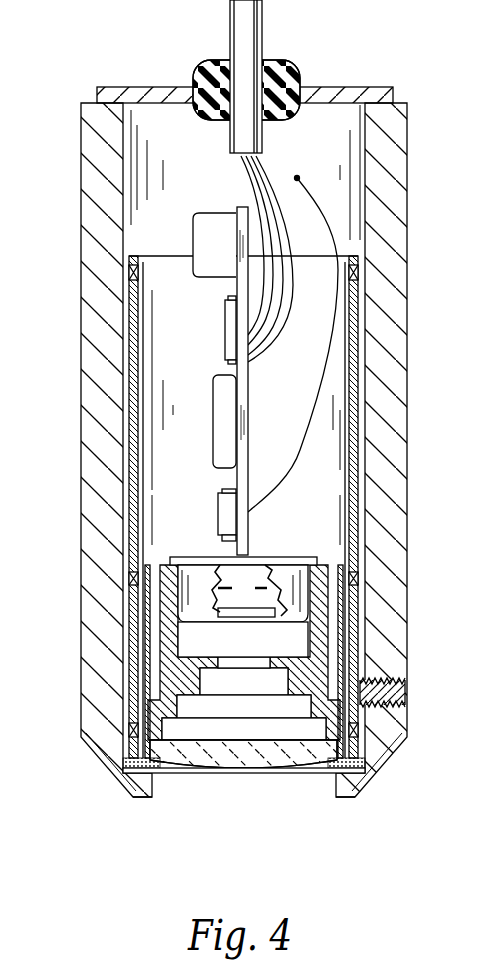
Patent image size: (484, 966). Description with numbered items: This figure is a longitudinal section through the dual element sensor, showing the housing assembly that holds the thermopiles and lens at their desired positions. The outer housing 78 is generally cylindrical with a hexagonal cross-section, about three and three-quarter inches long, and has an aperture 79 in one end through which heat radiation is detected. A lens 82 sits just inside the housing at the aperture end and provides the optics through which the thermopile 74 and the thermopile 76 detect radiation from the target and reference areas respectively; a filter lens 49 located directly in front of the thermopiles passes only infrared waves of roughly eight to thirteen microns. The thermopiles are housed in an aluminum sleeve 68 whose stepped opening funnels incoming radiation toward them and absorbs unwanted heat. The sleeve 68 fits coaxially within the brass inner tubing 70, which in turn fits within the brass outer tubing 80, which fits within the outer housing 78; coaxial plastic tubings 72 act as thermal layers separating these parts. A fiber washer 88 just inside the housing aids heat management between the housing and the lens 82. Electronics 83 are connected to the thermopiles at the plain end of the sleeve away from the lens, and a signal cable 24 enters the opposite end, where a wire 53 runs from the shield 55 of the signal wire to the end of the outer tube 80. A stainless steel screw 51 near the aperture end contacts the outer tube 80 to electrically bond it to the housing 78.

The cable 24 is at (263, 21).
The shield 55 is at (297, 178).
The wire 53 is at (328, 228).
The plastic tubings 72 is at (130, 750).
The electronics 83 is at (219, 359).
The outer tubing 80 is at (355, 413).
The outer housing 78 is at (393, 488).
The thermopile 74 is at (222, 585).
The thermopile 76 is at (263, 585).
The inner tubing 70 is at (337, 607).
The filter lens 49 is at (247, 612).
The sleeve 68 is at (307, 640).
The screw 51 is at (405, 690).
The lens 82 is at (277, 757).
The fiber washer 88 is at (363, 768).
The aperture 79 is at (199, 801).